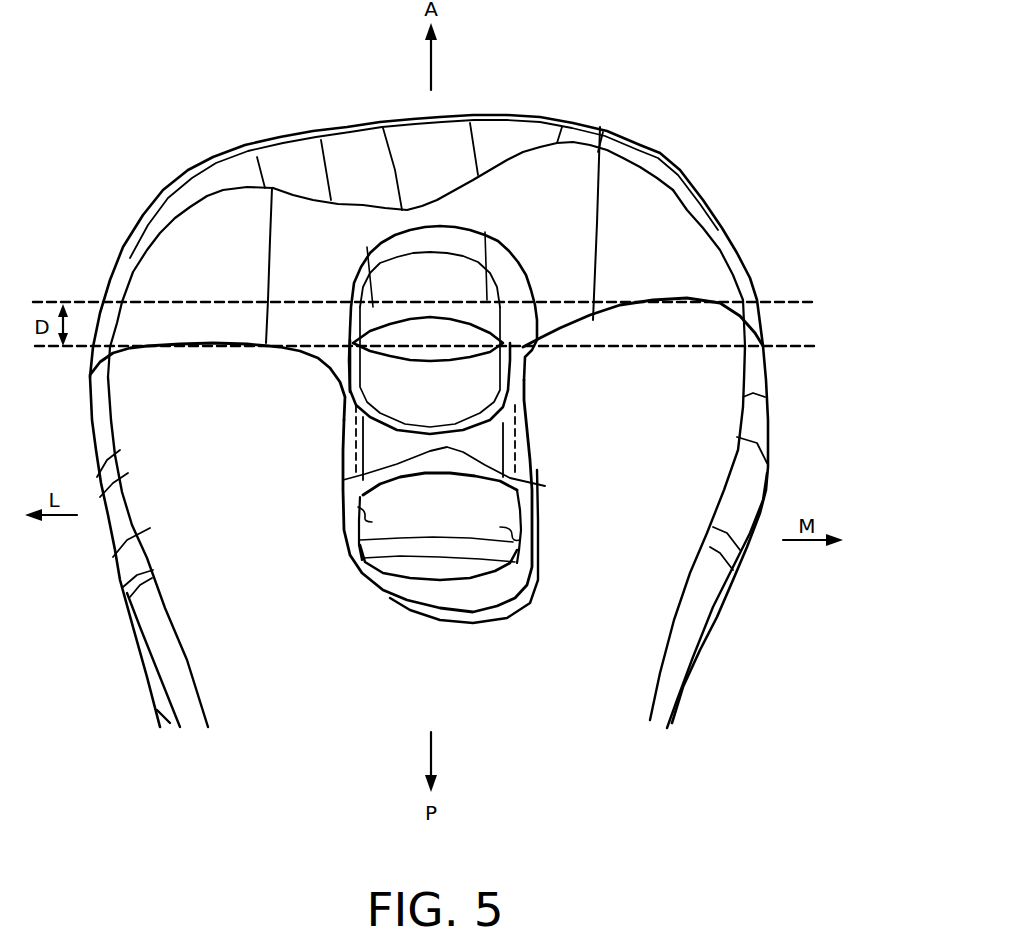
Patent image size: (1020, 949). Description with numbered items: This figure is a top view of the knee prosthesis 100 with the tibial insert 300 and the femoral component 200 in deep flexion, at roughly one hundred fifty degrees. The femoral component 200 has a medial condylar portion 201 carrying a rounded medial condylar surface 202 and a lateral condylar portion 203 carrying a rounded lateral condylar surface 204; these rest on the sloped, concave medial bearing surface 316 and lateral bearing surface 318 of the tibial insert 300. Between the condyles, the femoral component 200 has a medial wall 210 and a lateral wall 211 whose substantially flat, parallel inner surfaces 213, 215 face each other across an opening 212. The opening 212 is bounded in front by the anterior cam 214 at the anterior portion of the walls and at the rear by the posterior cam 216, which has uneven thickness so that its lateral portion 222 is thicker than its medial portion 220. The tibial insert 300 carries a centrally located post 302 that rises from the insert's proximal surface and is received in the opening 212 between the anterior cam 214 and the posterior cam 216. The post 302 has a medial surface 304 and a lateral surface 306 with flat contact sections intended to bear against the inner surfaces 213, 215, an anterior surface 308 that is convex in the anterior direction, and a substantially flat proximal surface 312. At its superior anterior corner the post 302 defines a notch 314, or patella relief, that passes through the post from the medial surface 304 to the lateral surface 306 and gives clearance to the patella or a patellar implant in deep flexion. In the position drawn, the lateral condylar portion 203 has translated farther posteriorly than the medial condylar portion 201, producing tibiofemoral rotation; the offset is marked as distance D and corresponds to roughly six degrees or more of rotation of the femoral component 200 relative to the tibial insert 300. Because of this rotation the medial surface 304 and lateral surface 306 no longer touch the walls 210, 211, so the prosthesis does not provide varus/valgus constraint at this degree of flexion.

The knee prosthesis 100 is at (727, 120).
The femoral component 200 is at (620, 680).
The medial condylar portion 201 is at (670, 618).
The medial condylar surface 202 is at (683, 497).
The lateral condylar portion 203 is at (125, 562).
The lateral condylar surface 204 is at (150, 437).
The medial wall 210 is at (513, 517).
The lateral wall 211 is at (353, 545).
The opening 212 is at (407, 583).
The inner surface 213 is at (537, 547).
The anterior cam 214 is at (453, 583).
The inner surface 215 is at (340, 543).
The posterior cam 216 is at (380, 458).
The medial portion 220 is at (490, 440).
The lateral portion 222 is at (380, 440).
The tibial insert 300 is at (613, 177).
The post 302 is at (390, 310).
The medial surface 304 is at (523, 360).
The lateral surface 306 is at (340, 370).
The anterior surface 308 is at (455, 273).
The proximal surface 312 is at (480, 387).
The notch 314 is at (470, 326).
The medial bearing surface 316 is at (677, 273).
The lateral bearing surface 318 is at (187, 310).